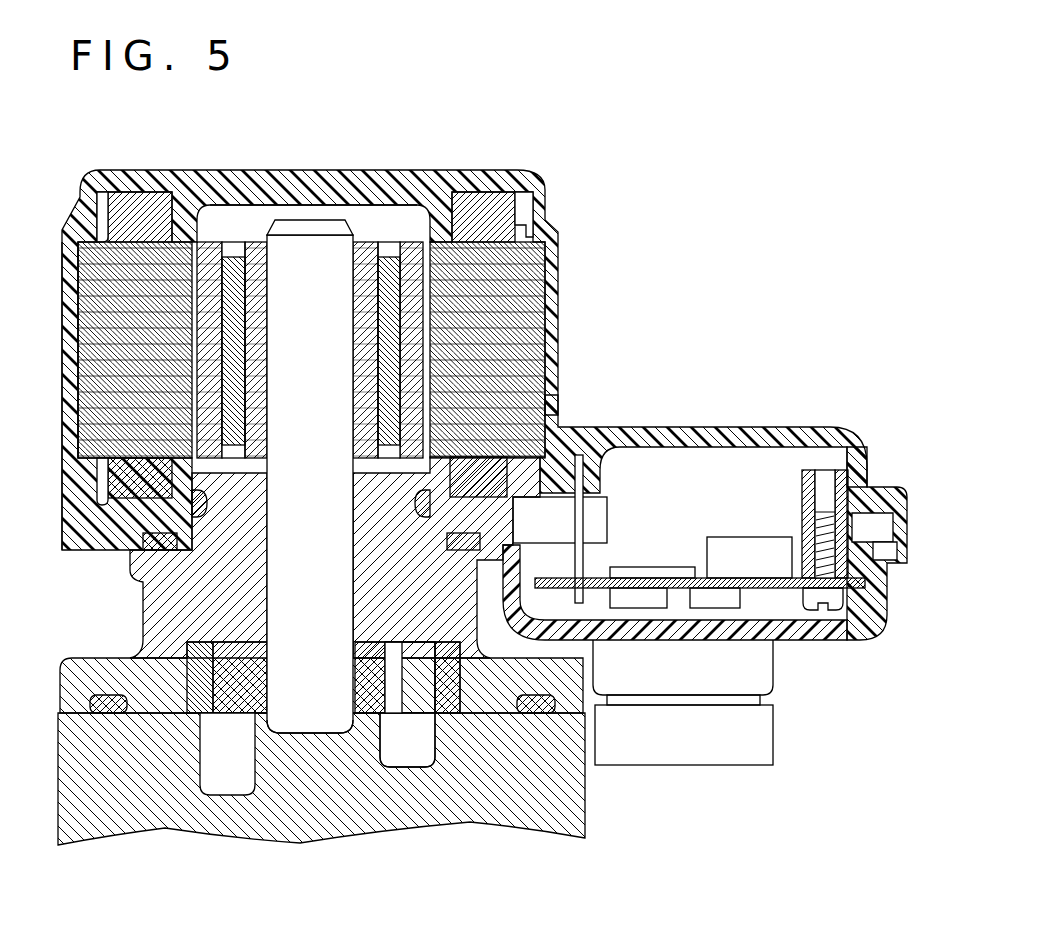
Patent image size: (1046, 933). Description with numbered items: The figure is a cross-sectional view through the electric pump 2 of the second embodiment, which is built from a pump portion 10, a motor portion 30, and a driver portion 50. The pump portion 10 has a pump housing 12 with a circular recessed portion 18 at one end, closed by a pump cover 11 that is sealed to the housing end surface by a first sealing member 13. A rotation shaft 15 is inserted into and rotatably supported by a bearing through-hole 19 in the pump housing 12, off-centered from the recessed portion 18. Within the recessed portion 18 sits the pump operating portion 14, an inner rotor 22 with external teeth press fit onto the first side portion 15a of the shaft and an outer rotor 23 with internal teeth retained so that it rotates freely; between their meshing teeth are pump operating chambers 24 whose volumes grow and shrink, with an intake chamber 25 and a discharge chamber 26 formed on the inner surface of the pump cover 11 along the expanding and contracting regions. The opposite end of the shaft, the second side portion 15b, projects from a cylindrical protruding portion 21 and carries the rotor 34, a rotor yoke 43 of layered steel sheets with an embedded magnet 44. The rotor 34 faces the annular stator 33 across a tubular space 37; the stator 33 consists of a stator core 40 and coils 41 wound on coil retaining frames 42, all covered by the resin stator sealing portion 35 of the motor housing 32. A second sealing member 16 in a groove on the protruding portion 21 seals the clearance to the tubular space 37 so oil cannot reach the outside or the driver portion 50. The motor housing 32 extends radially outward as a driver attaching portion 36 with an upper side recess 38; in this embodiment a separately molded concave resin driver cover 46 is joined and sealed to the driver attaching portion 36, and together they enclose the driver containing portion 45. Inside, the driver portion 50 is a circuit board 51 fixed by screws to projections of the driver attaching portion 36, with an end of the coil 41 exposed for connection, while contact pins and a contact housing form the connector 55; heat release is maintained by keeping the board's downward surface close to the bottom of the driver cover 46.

The electric pump 2 is at (752, 255).
The pump portion 10 is at (135, 642).
The pump cover 11 is at (63, 792).
The pump housing 12 is at (150, 593).
The first sealing member 13 is at (88, 702).
The pump operating portion 14 is at (185, 687).
The rotation shaft 15 is at (303, 720).
The first side portion 15a is at (330, 697).
The second side portion 15b is at (327, 263).
The second sealing member 16 is at (192, 510).
The recessed portion 18 is at (210, 673).
The bearing through-hole 19 is at (352, 560).
The protruding portion 21 is at (213, 485).
The inner rotor 22 is at (368, 712).
The outer rotor 23 is at (448, 660).
The pump operating chambers 24 is at (418, 720).
The intake chamber 25 is at (215, 787).
The discharge chamber 26 is at (415, 705).
The motor portion 30 is at (52, 245).
The motor housing 32 is at (469, 478).
The stator 33 is at (62, 337).
The rotor 34 is at (236, 258).
The stator sealing portion 35 is at (558, 247).
The driver attaching portion 36 is at (742, 427).
The tubular space 37 is at (372, 225).
The upper side recess 38 is at (722, 465).
The stator core 40 is at (83, 395).
The coils 41 is at (143, 195).
The coil retaining frames 42 is at (100, 212).
The rotor yoke 43 is at (258, 242).
The magnet 44 is at (238, 240).
The driver containing portion 45 is at (772, 477).
The driver cover 46 is at (795, 640).
The driver portion 50 is at (878, 475).
The circuit board 51 is at (660, 578).
The connector 55 is at (710, 757).